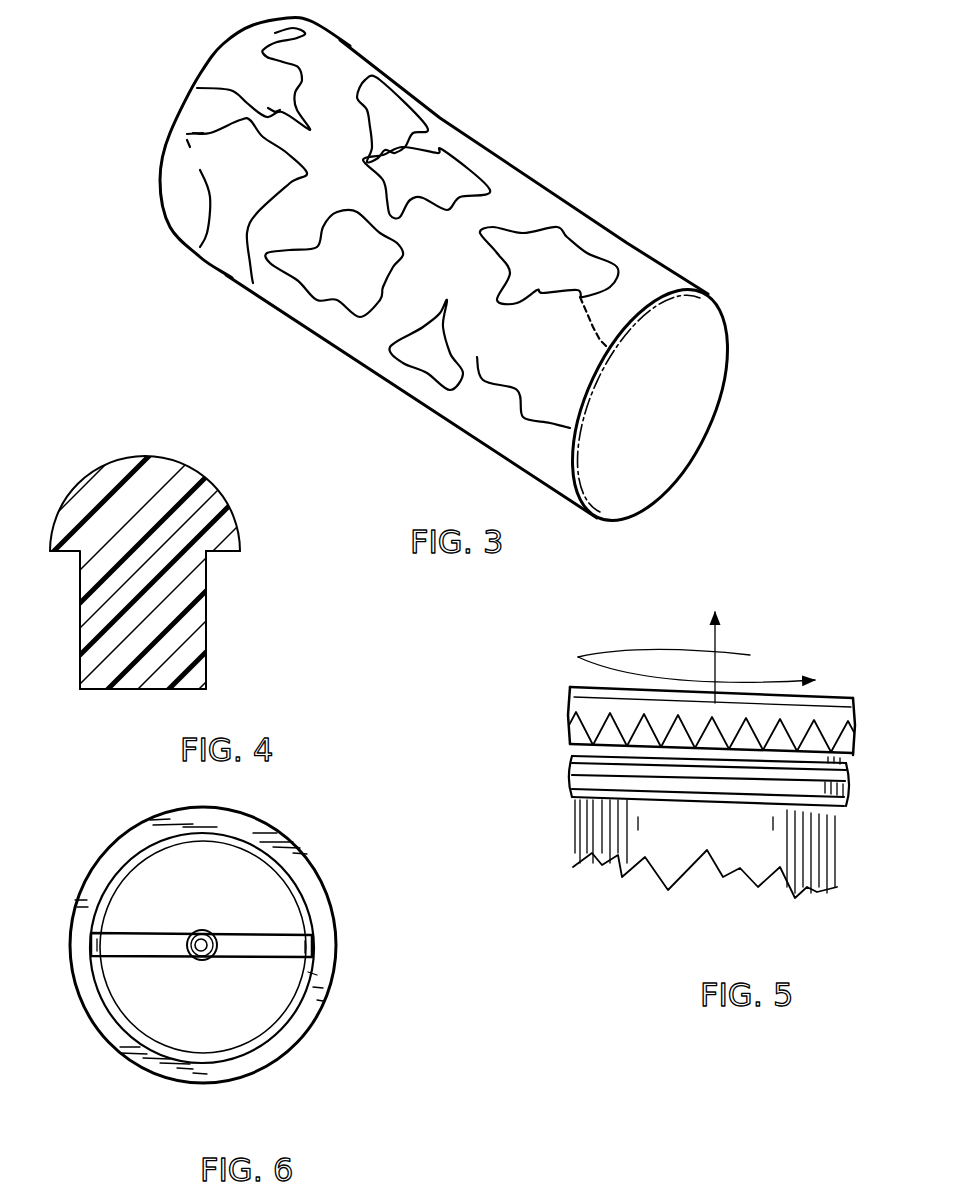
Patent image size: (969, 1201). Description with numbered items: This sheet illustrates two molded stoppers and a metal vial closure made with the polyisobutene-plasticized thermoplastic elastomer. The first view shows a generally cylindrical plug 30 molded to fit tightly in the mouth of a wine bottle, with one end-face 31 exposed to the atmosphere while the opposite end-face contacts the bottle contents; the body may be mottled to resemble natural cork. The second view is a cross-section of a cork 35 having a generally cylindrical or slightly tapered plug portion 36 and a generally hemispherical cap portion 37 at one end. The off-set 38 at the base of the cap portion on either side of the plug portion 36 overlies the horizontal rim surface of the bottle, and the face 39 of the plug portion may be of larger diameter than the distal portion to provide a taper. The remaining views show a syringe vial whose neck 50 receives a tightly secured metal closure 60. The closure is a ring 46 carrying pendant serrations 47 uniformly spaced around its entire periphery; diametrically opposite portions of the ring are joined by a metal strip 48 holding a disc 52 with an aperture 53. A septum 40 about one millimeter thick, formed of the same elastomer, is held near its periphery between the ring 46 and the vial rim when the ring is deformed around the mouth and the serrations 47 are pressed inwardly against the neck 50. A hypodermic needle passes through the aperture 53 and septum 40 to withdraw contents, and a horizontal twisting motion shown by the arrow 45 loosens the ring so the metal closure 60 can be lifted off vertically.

In FIG. 3, the cylindrical plug 30 is at (512, 133).
In FIG. 3, the end-face 31 is at (656, 434).
In FIG. 4, the cork 35 is at (244, 569).
In FIG. 4, the plug portion 36 is at (207, 632).
In FIG. 4, the cap portion 37 is at (213, 484).
In FIG. 4, the off-set 38 is at (227, 553).
In FIG. 4, the face of the plug portion 39 is at (103, 693).
In FIG. 6, the septum 40 is at (229, 945).
In FIG. 5, the arrow 45 is at (657, 650).
In FIG. 6, the ring 46 is at (308, 866).
In FIG. 5, the serrations 47 is at (800, 722).
In FIG. 6, the metal strip 48 is at (270, 933).
In FIG. 5, the neck 50 is at (838, 811).
In FIG. 6, the disc 52 is at (212, 932).
In FIG. 6, the aperture 53 is at (208, 958).
In FIG. 5, the metal closure 60 is at (733, 686).